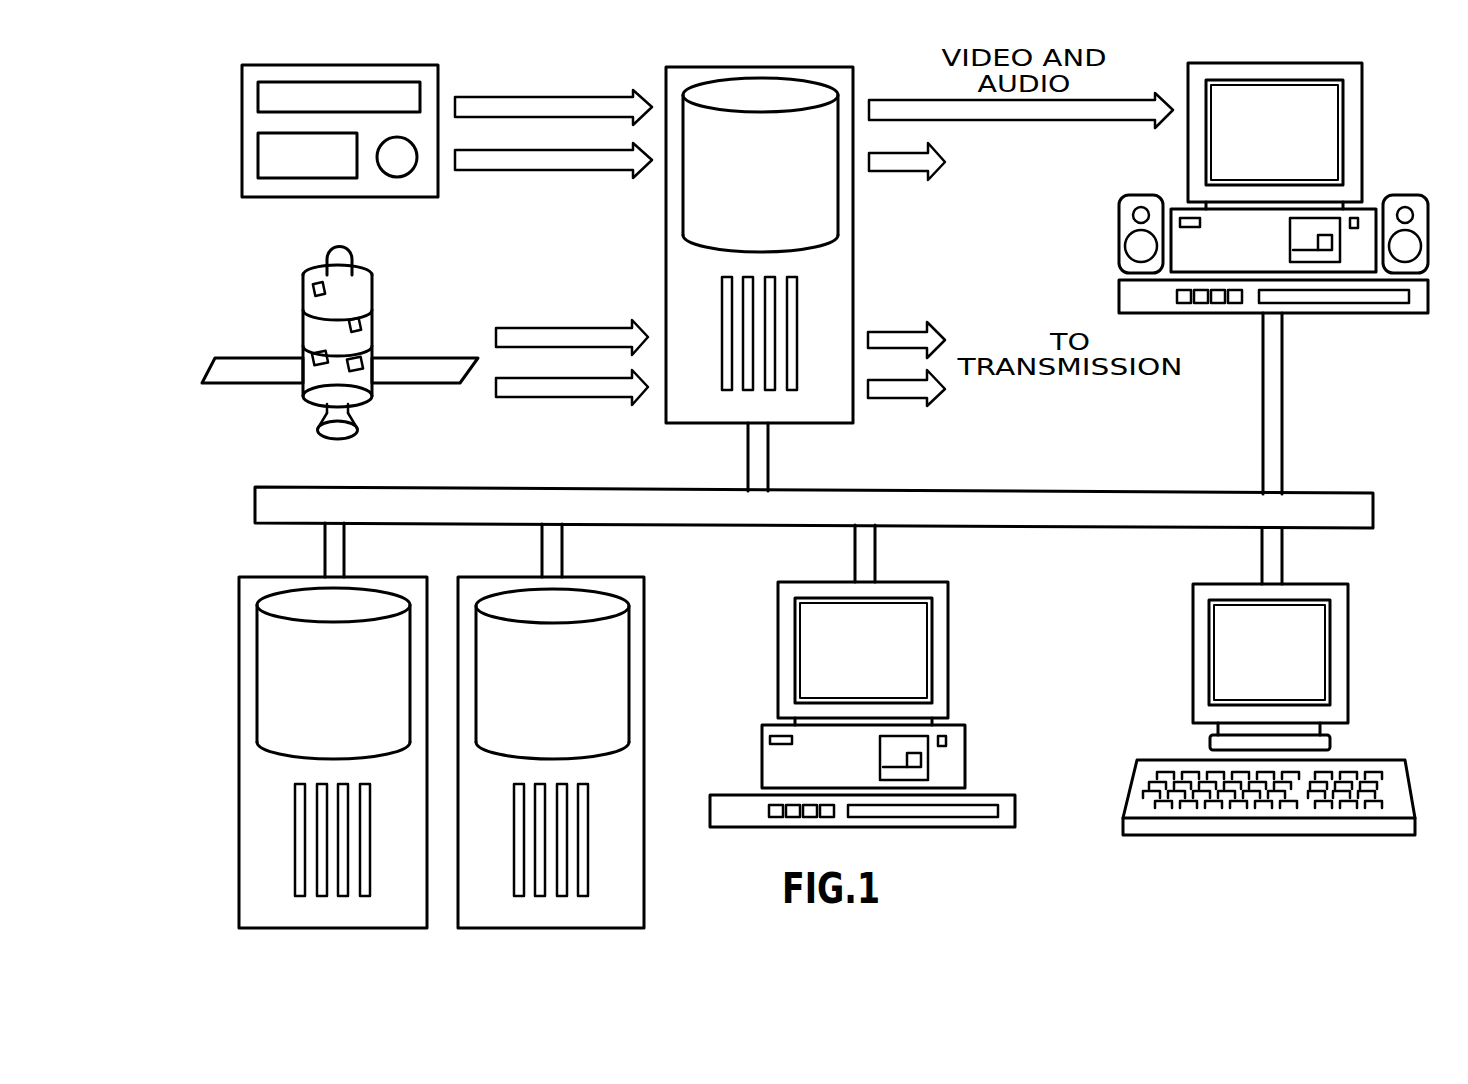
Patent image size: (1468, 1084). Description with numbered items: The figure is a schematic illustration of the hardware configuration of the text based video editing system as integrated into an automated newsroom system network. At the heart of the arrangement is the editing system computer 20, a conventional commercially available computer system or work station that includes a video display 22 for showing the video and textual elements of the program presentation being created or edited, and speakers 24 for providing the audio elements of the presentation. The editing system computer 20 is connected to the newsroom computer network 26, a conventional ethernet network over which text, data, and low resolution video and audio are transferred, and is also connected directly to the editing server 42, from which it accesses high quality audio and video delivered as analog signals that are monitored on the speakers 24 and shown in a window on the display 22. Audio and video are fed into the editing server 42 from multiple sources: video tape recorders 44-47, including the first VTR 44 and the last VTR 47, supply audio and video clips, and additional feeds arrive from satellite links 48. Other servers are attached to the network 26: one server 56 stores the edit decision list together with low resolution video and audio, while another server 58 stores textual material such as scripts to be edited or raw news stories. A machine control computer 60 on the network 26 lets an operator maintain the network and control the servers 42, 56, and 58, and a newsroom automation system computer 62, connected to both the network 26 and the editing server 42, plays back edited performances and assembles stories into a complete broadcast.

The editing system computer 20 is at (1293, 278).
The video display 22 is at (1362, 82).
The speakers 24 is at (1428, 237).
The newsroom computer network 26 is at (1375, 509).
The editing server 42 is at (666, 215).
The video tape recorders 44-47 is at (289, 152).
The video tape recorder 44 is at (289, 152).
The video tape recorder 47 is at (268, 199).
The satellite links 48 is at (300, 303).
The server 56 is at (239, 694).
The server 58 is at (646, 701).
The machine control computer 60 is at (1393, 718).
The newsroom automation system computer 62 is at (1001, 726).